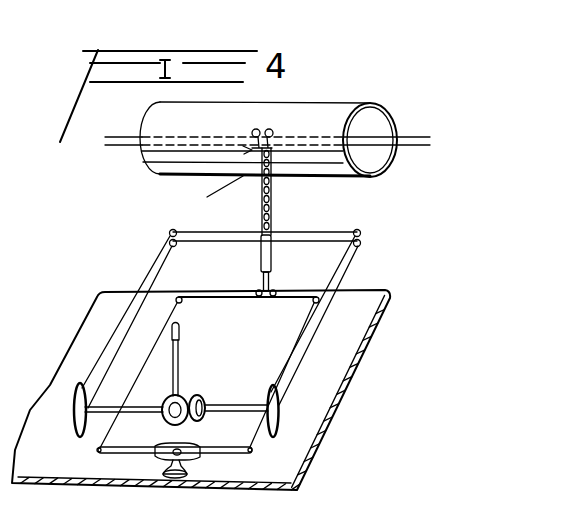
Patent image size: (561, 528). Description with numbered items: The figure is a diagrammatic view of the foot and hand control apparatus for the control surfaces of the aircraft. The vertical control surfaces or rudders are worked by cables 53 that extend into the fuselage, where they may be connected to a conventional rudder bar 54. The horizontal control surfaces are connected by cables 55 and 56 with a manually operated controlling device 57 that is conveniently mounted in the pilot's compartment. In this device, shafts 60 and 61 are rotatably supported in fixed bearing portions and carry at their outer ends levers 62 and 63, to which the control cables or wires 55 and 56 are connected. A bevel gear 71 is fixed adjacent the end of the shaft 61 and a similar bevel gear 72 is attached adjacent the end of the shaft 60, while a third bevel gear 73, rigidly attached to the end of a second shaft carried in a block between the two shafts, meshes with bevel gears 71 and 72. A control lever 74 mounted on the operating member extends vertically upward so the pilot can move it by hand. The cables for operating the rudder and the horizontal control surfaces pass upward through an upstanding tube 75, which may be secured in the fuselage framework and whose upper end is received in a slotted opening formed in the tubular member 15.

The tubular member 15 is at (293, 108).
The cables 53 is at (138, 147).
The rudder bar 54 is at (201, 447).
The cables 55 is at (155, 273).
The cables 56 is at (349, 275).
The manually operated controlling device 57 is at (187, 378).
The shaft 60 is at (110, 401).
The shaft 61 is at (229, 403).
The lever 62 is at (75, 405).
The lever 63 is at (282, 398).
The bevel gear 71 is at (205, 396).
The bevel gear 72 is at (166, 418).
The bevel gear 73 is at (177, 419).
The control lever 74 is at (184, 333).
The upstanding tube 75 is at (270, 207).